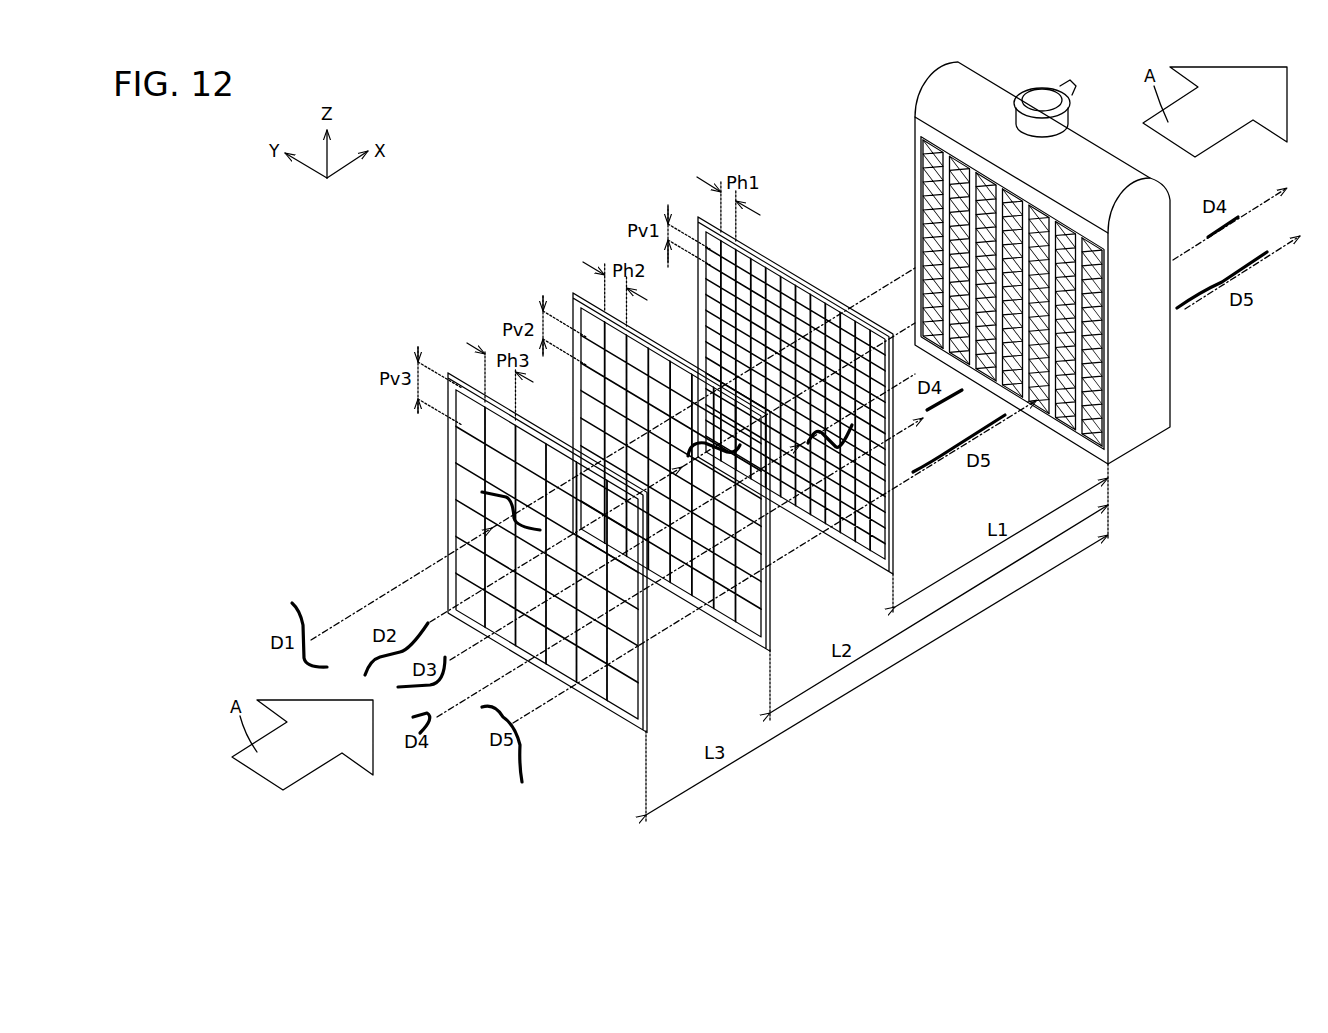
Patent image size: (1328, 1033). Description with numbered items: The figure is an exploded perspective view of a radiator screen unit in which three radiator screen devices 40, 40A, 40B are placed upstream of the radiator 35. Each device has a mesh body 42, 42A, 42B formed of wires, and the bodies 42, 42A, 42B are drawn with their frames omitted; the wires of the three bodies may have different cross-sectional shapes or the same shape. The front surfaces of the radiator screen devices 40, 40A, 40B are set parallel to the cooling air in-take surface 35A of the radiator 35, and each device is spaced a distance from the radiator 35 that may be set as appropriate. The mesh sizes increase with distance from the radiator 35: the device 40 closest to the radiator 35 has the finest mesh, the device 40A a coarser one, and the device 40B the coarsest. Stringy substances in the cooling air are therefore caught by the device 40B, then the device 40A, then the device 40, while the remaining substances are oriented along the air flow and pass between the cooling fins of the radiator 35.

The radiator 35 is at (1007, 259).
The cooling air in-take surface 35A is at (950, 190).
The body 42 is at (771, 359).
The body 42A is at (642, 437).
The body 42B is at (518, 516).
The radiator screen device 40 is at (698, 217).
The radiator screen device 40A is at (574, 293).
The radiator screen device 40B is at (449, 372).